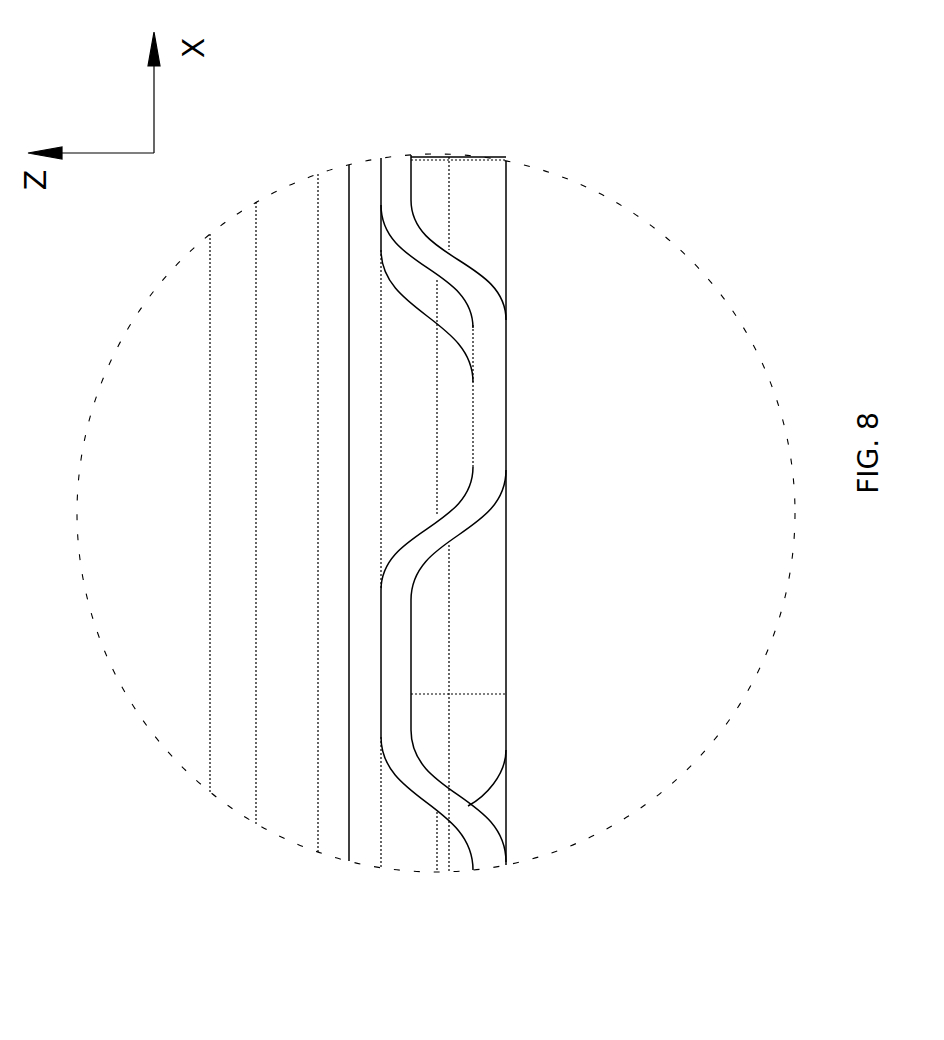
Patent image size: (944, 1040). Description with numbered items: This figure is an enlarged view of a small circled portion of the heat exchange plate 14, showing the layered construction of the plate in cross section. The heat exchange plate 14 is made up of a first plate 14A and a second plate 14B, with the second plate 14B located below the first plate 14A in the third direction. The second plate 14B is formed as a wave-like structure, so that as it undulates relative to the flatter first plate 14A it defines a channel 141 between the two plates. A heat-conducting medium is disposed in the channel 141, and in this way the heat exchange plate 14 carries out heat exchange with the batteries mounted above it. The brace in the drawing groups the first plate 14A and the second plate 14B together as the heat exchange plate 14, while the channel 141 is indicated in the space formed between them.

The channel 141 is at (410, 428).
The heat exchange plate 14 is at (515, 512).
The first plate 14A is at (368, 630).
The second plate 14B is at (487, 472).